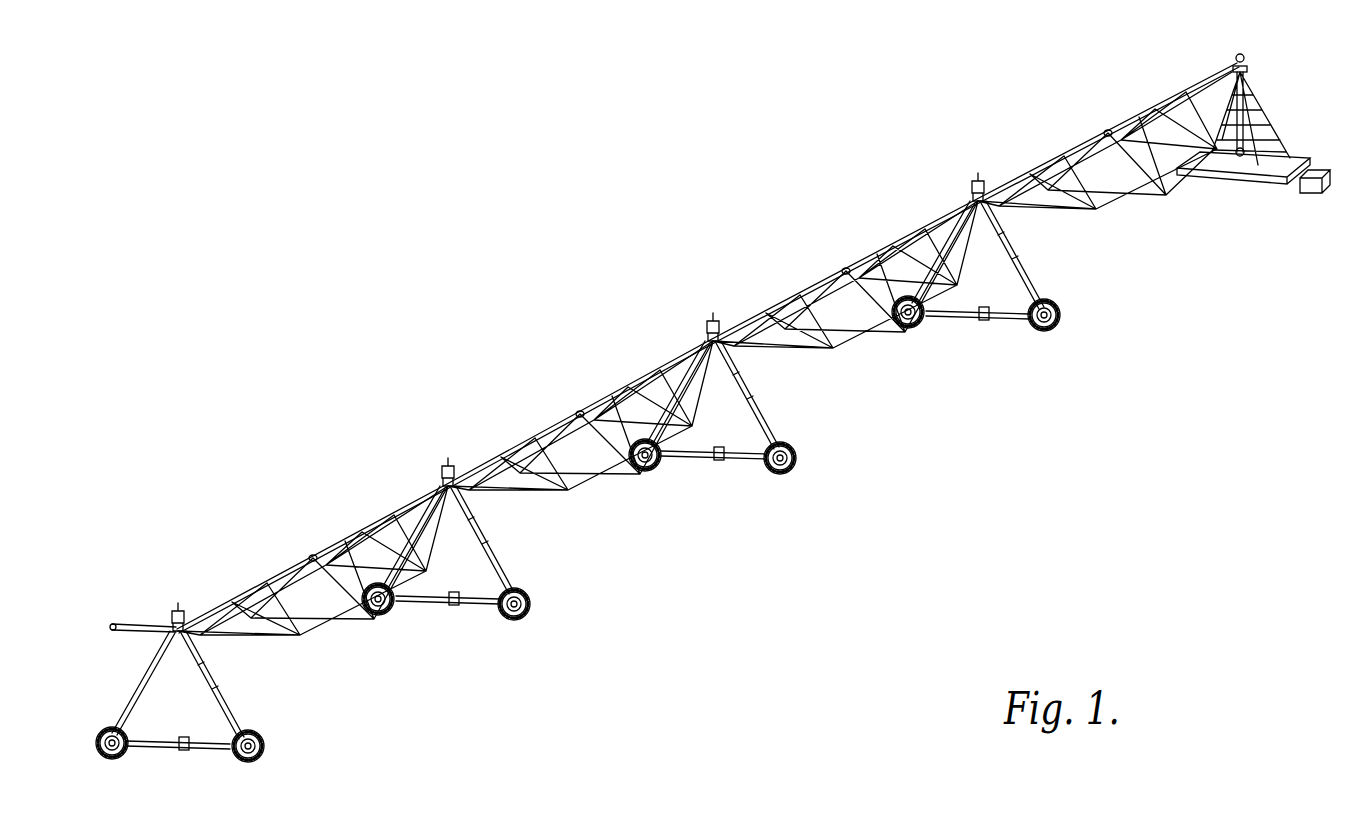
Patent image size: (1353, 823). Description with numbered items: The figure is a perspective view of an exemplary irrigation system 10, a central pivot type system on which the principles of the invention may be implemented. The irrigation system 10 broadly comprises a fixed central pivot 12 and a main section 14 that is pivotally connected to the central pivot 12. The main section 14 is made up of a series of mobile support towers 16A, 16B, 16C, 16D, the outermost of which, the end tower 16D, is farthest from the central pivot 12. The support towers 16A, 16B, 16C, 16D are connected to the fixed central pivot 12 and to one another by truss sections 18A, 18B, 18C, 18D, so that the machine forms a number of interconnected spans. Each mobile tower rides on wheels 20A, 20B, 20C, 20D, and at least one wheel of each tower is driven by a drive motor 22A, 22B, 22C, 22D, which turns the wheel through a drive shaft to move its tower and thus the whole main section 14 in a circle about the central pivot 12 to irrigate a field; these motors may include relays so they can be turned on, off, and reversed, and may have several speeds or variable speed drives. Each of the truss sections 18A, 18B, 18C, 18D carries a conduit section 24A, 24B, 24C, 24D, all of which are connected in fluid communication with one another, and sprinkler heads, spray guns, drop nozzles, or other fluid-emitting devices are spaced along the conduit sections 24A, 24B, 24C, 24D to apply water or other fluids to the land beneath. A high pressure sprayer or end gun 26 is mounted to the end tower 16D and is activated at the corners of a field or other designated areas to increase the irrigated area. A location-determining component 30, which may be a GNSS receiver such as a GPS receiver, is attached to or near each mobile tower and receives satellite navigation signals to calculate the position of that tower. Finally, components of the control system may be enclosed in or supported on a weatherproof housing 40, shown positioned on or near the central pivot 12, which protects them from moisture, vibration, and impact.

The irrigation system 10 is at (712, 157).
The central pivot 12 is at (1285, 102).
The main section 14 is at (626, 230).
The mobile support tower 16A is at (1022, 228).
The mobile support tower 16B is at (757, 376).
The mobile support tower 16C is at (490, 517).
The end tower 16D is at (229, 682).
The truss section 18A is at (1110, 170).
The truss section 18B is at (847, 309).
The truss section 18C is at (580, 455).
The truss section 18D is at (313, 593).
The wheels 20A is at (1062, 314).
The wheels 20B is at (797, 458).
The wheels 20C is at (530, 603).
The wheels 20D is at (265, 746).
The drive motor 22A is at (983, 317).
The drive motor 22B is at (718, 456).
The drive motor 22C is at (452, 600).
The drive motor 22D is at (188, 742).
The conduit section 24A is at (1122, 116).
The conduit section 24B is at (857, 258).
The conduit section 24C is at (590, 403).
The conduit section 24D is at (330, 545).
The end gun 26 is at (135, 622).
The location-determining component 30 is at (177, 605).
The weatherproof housing 40 is at (1312, 188).